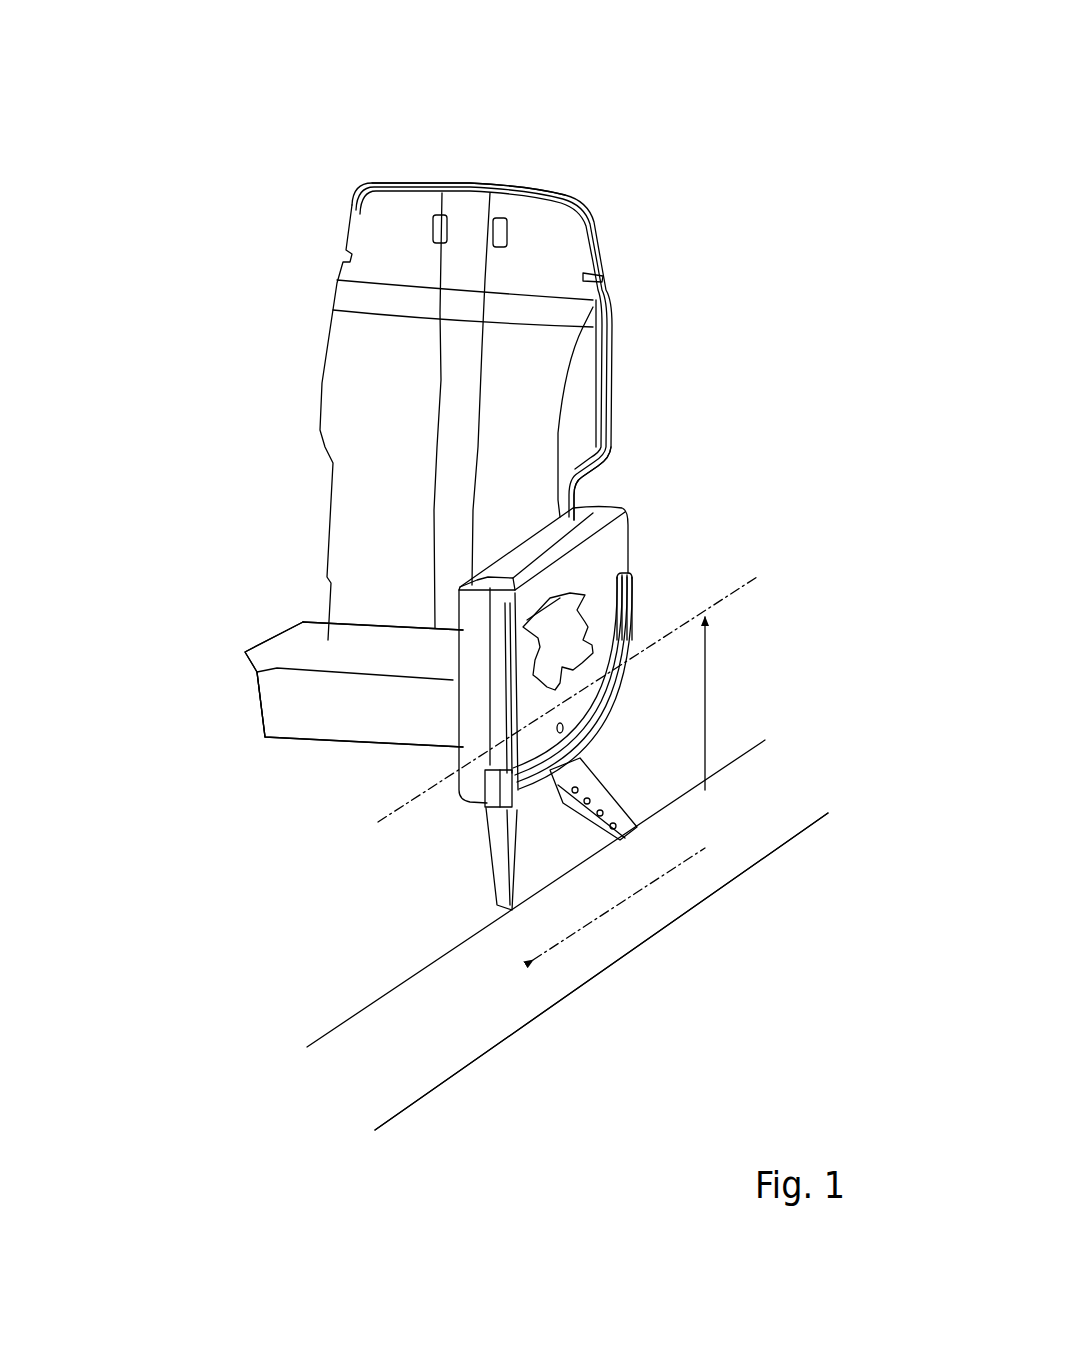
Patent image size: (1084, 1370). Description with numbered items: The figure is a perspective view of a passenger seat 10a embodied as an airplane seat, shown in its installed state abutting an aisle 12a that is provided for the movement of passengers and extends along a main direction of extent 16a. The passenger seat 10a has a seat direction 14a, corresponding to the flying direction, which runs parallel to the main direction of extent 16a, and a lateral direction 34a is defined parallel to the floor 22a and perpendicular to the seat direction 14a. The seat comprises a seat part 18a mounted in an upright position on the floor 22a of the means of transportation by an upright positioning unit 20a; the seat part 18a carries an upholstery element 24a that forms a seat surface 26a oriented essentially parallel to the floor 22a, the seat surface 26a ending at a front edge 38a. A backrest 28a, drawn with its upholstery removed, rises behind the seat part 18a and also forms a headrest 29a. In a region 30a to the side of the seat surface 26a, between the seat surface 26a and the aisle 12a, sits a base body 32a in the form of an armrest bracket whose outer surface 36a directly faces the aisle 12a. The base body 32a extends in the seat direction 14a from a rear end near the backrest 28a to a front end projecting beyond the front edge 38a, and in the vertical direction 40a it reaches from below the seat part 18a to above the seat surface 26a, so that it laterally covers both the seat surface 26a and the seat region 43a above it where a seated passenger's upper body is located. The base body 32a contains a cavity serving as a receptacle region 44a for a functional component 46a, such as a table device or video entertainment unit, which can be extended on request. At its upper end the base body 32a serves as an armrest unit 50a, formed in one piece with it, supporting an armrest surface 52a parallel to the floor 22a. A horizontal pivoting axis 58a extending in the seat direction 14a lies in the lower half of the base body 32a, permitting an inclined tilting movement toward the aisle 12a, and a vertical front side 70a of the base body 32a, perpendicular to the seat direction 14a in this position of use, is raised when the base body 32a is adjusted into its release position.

The passenger seat 10a is at (680, 182).
The aisle 12a is at (763, 800).
The seat direction 14a is at (518, 383).
The main direction of extent 16a is at (575, 823).
The seat part 18a is at (322, 694).
The upright positioning unit 20a is at (500, 867).
The floor 22a is at (690, 734).
The upholstery element 24a is at (307, 647).
The seat surface 26a is at (303, 617).
The backrest 28a is at (570, 215).
The headrest 29a is at (398, 200).
The region to the side of the seat surface 30a is at (450, 710).
The base body 32a is at (563, 660).
The lateral direction 34a is at (423, 377).
The outer surface 36a is at (610, 663).
The front edge 38a is at (260, 676).
The vertical direction 40a is at (712, 678).
The seat region 43a is at (407, 612).
The receptacle region 44a is at (623, 567).
The functional component 46a is at (577, 790).
The armrest unit 50a is at (597, 497).
The armrest surface 52a is at (610, 275).
The pivoting axis 58a is at (374, 828).
The front side 70a is at (462, 722).